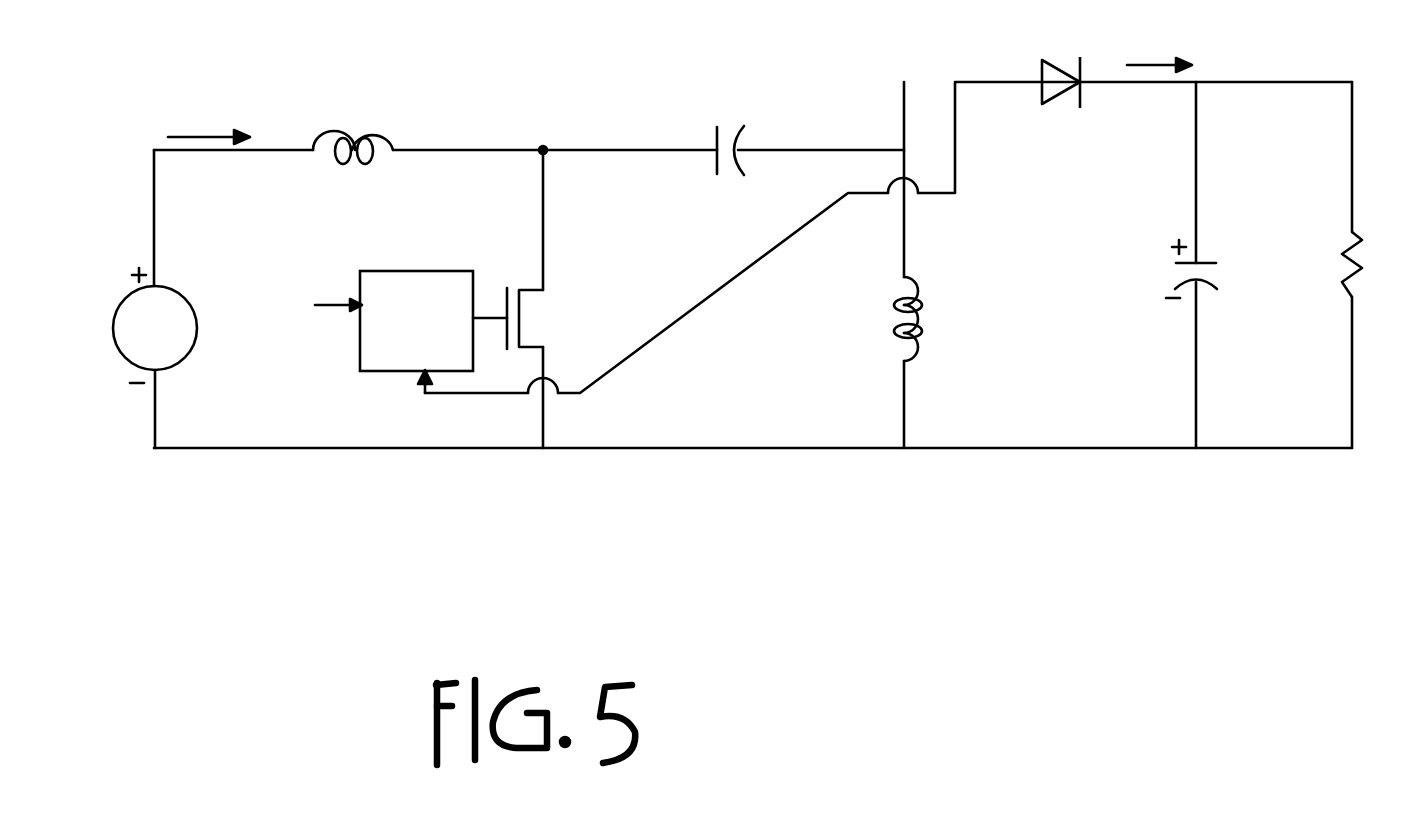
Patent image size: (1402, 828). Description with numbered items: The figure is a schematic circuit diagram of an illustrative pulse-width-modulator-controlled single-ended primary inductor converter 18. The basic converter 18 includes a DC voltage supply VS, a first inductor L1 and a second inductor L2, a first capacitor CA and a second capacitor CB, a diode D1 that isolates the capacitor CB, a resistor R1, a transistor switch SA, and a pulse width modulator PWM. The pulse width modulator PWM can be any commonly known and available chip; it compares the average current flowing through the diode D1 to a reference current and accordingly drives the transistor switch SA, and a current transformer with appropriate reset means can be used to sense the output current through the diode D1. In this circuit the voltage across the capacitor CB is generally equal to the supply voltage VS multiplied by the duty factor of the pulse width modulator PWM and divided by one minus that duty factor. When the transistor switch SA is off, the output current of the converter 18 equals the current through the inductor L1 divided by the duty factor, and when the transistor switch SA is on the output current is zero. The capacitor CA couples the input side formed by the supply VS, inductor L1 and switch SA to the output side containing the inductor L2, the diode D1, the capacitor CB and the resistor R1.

The single-ended primary inductor converter 18 is at (737, 235).
The DC voltage supply VS is at (134, 328).
The inductor L1 is at (353, 169).
The capacitor CA is at (733, 172).
The transistor switch SA is at (547, 318).
The pulse width modulator PWM is at (416, 321).
The inductor L2 is at (882, 319).
The diode D1 is at (1054, 100).
The capacitor CB is at (1219, 282).
The resistor R1 is at (1372, 264).